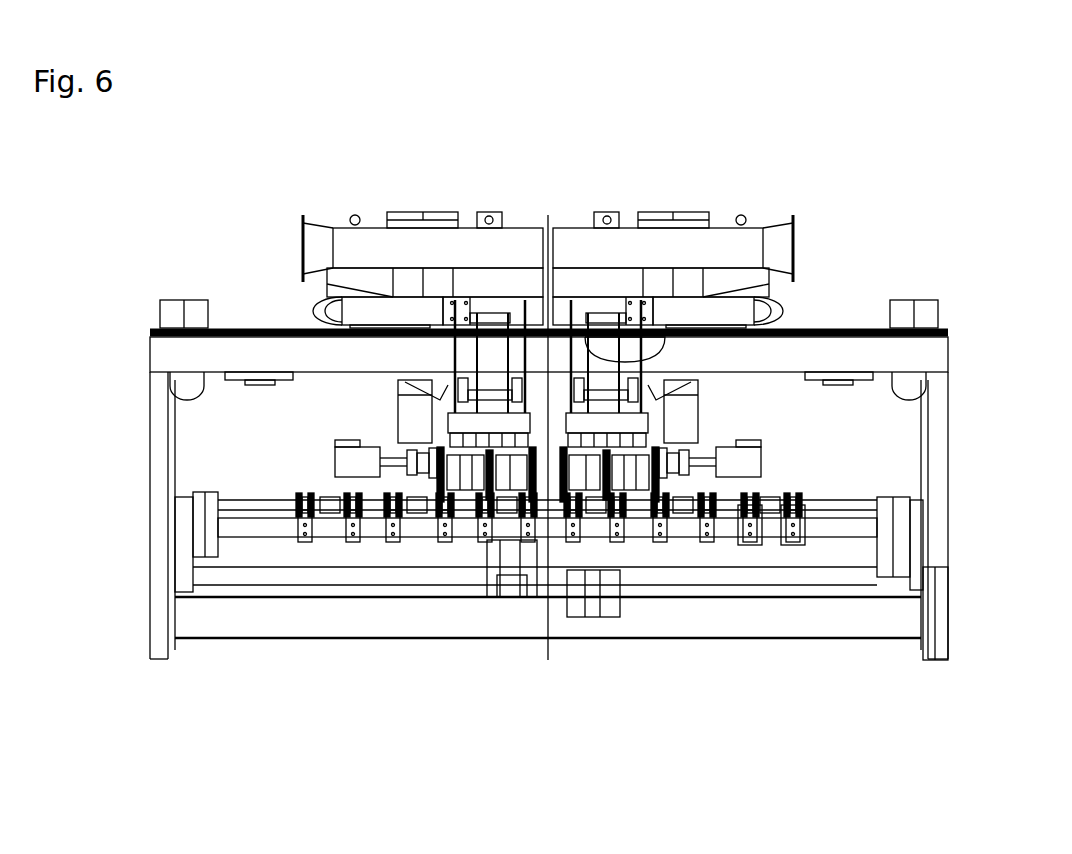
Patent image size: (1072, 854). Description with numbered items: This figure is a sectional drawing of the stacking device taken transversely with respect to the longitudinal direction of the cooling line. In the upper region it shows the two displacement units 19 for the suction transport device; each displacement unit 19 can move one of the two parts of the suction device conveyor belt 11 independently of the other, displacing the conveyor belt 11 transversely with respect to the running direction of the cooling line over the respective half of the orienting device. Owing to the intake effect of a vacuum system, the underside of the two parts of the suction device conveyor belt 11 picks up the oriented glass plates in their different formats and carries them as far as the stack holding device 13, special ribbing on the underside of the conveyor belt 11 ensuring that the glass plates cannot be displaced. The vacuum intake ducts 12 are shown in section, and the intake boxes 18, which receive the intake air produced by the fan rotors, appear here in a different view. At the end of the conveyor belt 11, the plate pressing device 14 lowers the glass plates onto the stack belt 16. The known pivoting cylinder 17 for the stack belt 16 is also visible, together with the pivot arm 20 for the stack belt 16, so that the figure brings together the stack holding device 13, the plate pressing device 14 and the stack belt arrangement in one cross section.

The suction device conveyor belt 11 is at (570, 497).
The vacuum intake duct 12 is at (655, 395).
The stack holding device 13 is at (445, 373).
The plate pressing device 14 is at (433, 390).
The stack belt 16 is at (747, 540).
The pivoting cylinder 17 is at (207, 550).
The intake box 18 is at (508, 500).
The displacement unit 19 is at (373, 308).
The pivot arm 20 is at (722, 543).